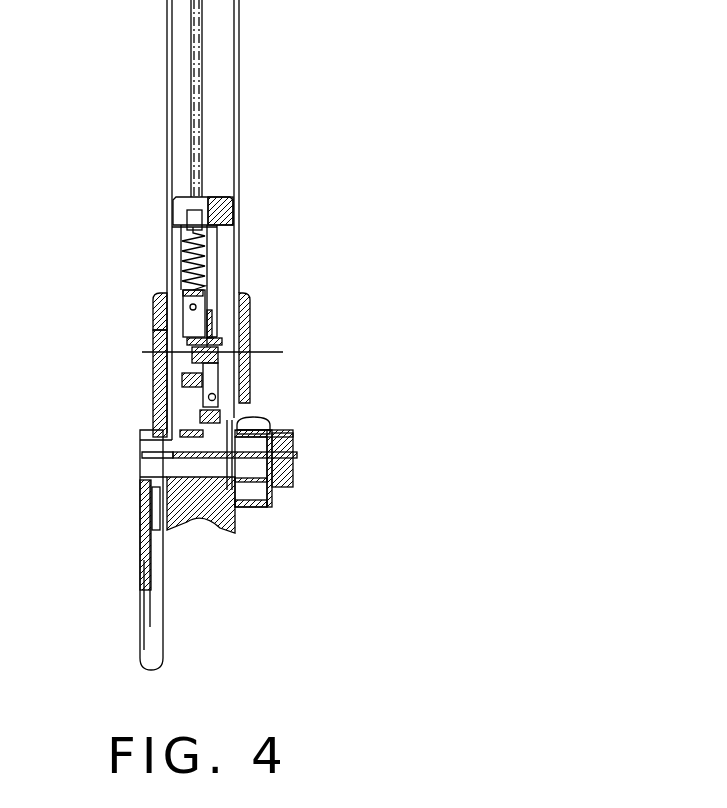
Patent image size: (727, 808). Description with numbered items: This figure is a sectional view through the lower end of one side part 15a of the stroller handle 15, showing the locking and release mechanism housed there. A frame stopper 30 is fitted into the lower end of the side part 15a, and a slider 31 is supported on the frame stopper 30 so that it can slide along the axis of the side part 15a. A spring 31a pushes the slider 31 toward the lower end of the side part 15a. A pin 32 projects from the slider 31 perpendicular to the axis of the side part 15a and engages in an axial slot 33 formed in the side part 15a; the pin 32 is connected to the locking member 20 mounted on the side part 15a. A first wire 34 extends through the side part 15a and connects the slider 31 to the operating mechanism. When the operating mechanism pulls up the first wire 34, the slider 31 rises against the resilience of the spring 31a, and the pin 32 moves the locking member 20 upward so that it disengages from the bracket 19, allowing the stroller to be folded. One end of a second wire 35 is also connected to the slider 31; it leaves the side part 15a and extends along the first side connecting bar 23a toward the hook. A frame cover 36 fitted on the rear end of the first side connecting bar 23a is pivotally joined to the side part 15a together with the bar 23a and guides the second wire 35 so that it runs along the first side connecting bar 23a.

The handle 15 is at (240, 135).
The side part of the handle 15a is at (240, 33).
The first wire 34 is at (197, 145).
The spring 31a is at (180, 257).
The slider 31 is at (193, 323).
The locking member 20 is at (252, 313).
The axial slot 33 is at (152, 338).
The pin 32 is at (288, 352).
The second wire 35 is at (212, 462).
The first side connecting bar 23a is at (297, 440).
The frame cover 36 is at (253, 507).
The frame stopper 30 is at (192, 530).
The bracket 19 is at (163, 483).